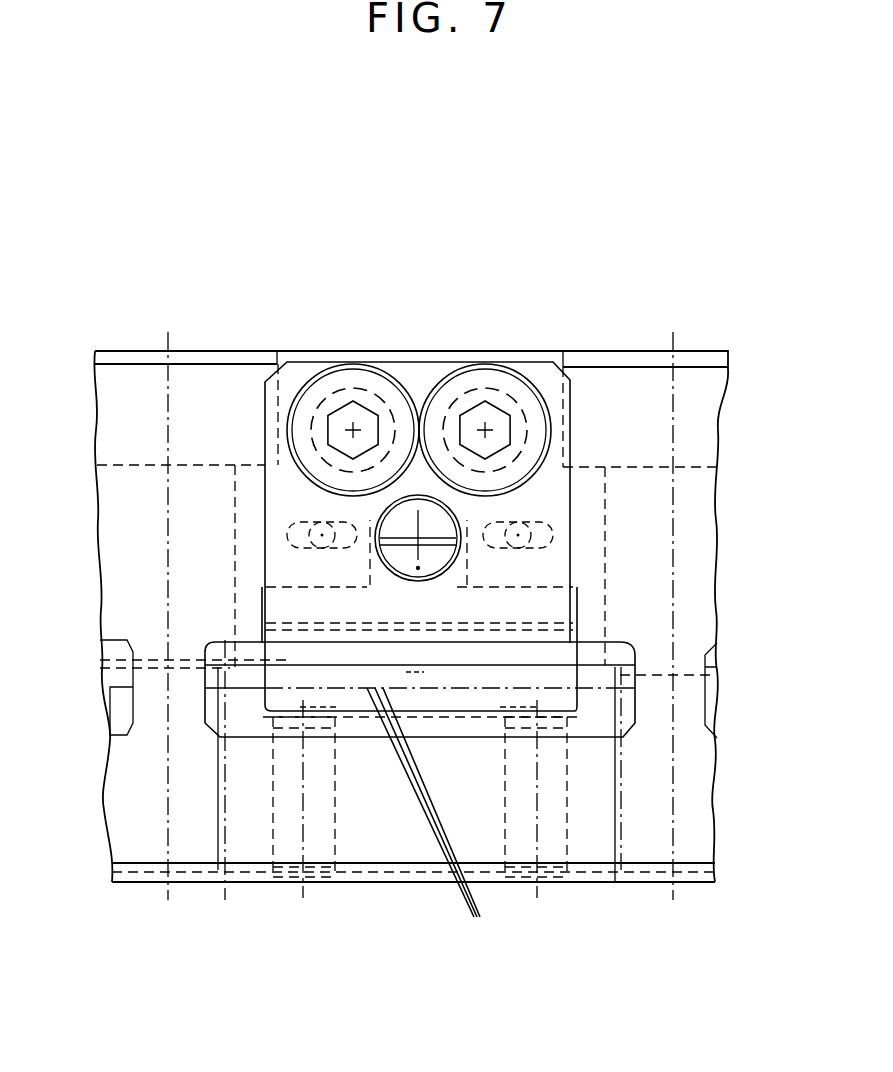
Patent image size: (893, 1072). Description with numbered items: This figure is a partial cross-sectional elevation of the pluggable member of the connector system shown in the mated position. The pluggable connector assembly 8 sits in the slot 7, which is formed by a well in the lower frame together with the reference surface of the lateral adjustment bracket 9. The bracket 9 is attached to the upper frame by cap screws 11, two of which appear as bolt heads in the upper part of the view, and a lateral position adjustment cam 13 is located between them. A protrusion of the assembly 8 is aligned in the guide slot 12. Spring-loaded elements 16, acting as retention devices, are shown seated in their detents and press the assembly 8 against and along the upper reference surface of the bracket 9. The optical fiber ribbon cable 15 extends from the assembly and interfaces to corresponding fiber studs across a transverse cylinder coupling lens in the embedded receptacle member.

The slot 7 is at (262, 597).
The pluggable receptacle part 8 is at (108, 640).
The lateral adjustment bracket 9 is at (570, 380).
The cap screws 11 is at (452, 372).
The guide slot 12 is at (420, 673).
The cam 13 is at (457, 520).
The optical fiber ribbon cable 15 is at (429, 819).
The spring-loaded elements 16 is at (296, 708).